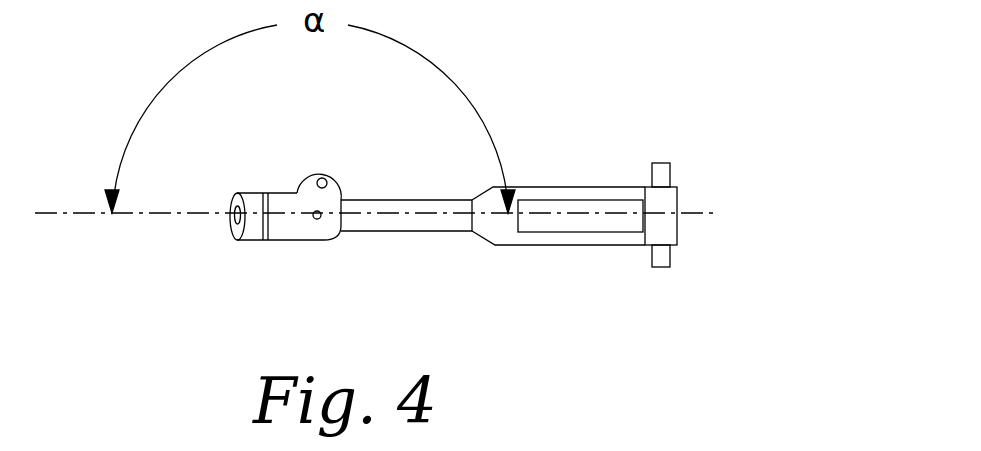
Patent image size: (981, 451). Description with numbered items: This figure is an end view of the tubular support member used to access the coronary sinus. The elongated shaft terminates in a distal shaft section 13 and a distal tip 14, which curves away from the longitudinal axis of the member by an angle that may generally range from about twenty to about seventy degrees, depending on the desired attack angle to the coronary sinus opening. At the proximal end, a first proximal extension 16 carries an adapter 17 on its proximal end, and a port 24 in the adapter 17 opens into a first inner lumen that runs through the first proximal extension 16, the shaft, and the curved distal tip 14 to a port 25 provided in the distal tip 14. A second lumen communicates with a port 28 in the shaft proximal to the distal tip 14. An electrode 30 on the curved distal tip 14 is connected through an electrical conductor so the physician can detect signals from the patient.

The distal shaft section 13 is at (298, 178).
The distal tip 14 is at (228, 247).
The first proximal extension 16 is at (407, 223).
The adapter 17 is at (590, 187).
The port 24 is at (680, 197).
The port 25 is at (227, 215).
The port 28 is at (333, 186).
The electrode 30 is at (263, 240).